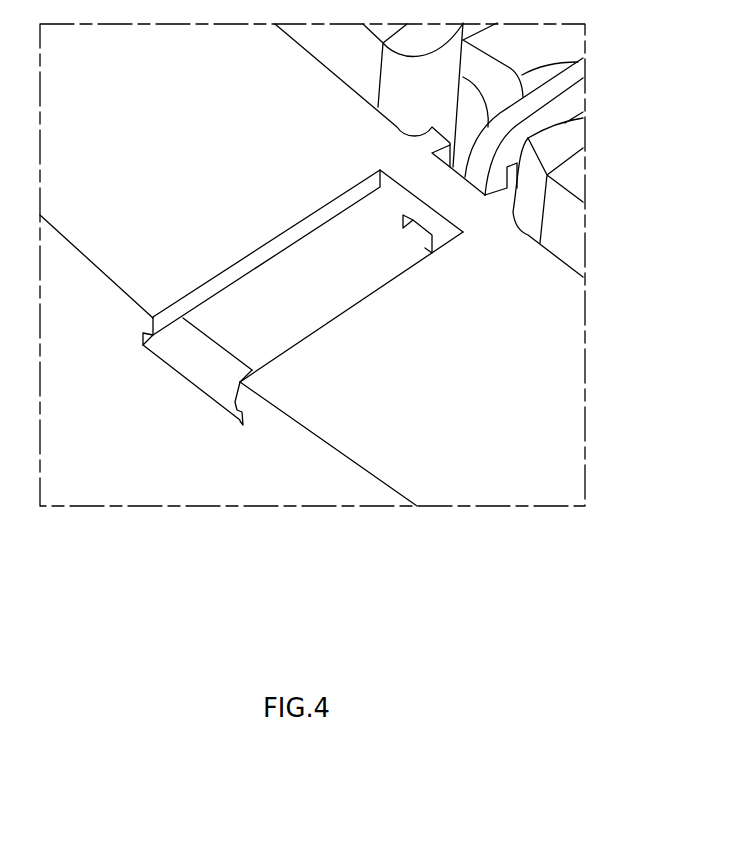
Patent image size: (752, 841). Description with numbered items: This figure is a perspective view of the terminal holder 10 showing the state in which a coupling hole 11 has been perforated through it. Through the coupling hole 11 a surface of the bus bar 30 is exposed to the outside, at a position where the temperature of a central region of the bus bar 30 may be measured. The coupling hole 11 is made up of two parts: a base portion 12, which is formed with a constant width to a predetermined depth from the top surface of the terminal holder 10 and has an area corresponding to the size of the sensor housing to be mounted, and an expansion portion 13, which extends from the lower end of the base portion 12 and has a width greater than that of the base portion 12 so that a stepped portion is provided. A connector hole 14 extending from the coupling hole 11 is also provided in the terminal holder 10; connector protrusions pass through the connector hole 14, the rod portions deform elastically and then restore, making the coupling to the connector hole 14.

The terminal holder 10 is at (557, 314).
The coupling hole 11 is at (342, 266).
The base portion 12 is at (272, 314).
The expansion portion 13 is at (240, 423).
The connector hole 14 is at (420, 233).
The bus bar 30 is at (292, 275).